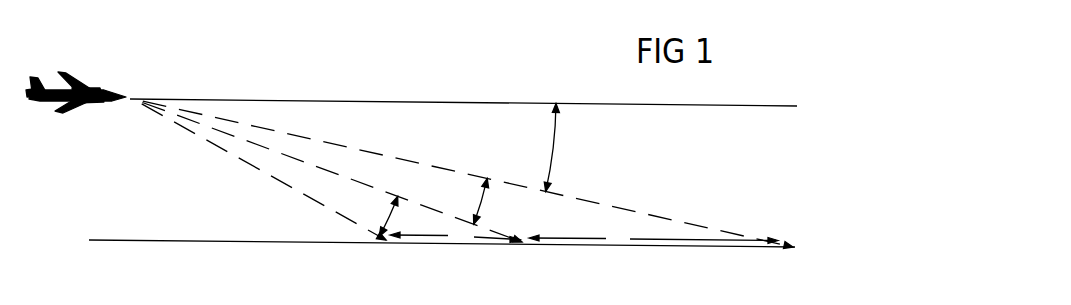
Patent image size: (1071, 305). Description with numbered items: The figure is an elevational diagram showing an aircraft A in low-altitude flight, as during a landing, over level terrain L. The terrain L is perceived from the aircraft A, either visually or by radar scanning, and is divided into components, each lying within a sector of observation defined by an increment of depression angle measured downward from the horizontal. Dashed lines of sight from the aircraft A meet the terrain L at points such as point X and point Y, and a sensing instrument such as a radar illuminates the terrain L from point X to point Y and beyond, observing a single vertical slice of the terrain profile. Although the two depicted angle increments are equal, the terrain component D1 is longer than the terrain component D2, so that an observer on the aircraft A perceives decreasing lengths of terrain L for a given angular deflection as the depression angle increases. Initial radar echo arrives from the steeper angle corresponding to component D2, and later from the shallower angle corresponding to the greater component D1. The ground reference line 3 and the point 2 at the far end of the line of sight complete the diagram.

The aircraft A is at (106, 91).
The target point Y on ground line 2 is at (805, 250).
The ground line 3 is at (432, 239).
The terrain L is at (590, 246).
The point X is at (388, 244).
The point Y is at (796, 252).
The terrain component D1 is at (653, 239).
The terrain component D2 is at (455, 235).